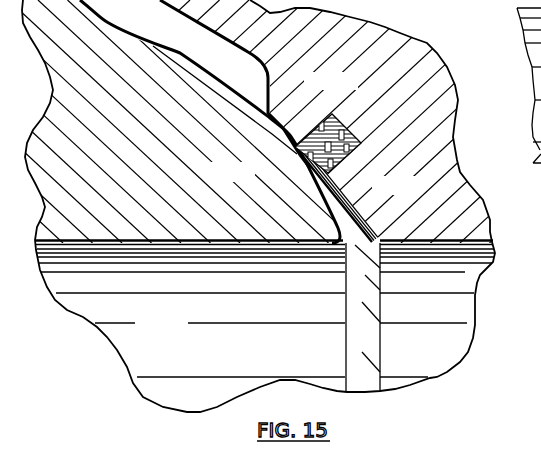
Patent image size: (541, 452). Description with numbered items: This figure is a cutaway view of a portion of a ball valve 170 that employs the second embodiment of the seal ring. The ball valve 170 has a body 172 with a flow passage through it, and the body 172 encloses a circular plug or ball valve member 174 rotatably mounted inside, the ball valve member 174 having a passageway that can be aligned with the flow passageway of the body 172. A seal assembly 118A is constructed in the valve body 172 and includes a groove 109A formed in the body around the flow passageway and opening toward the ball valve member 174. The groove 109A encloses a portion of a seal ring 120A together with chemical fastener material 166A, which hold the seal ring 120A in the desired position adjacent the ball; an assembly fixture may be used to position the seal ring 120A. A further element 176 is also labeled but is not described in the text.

The ball valve 170 is at (127, 404).
The body 172 is at (373, 40).
The ball valve member 174 is at (181, 337).
The lower member 176 is at (154, 446).
The groove 109A is at (364, 143).
The seal assembly 118A is at (285, 185).
The seal ring 120A is at (324, 170).
The chemical fastener material 166A is at (324, 113).